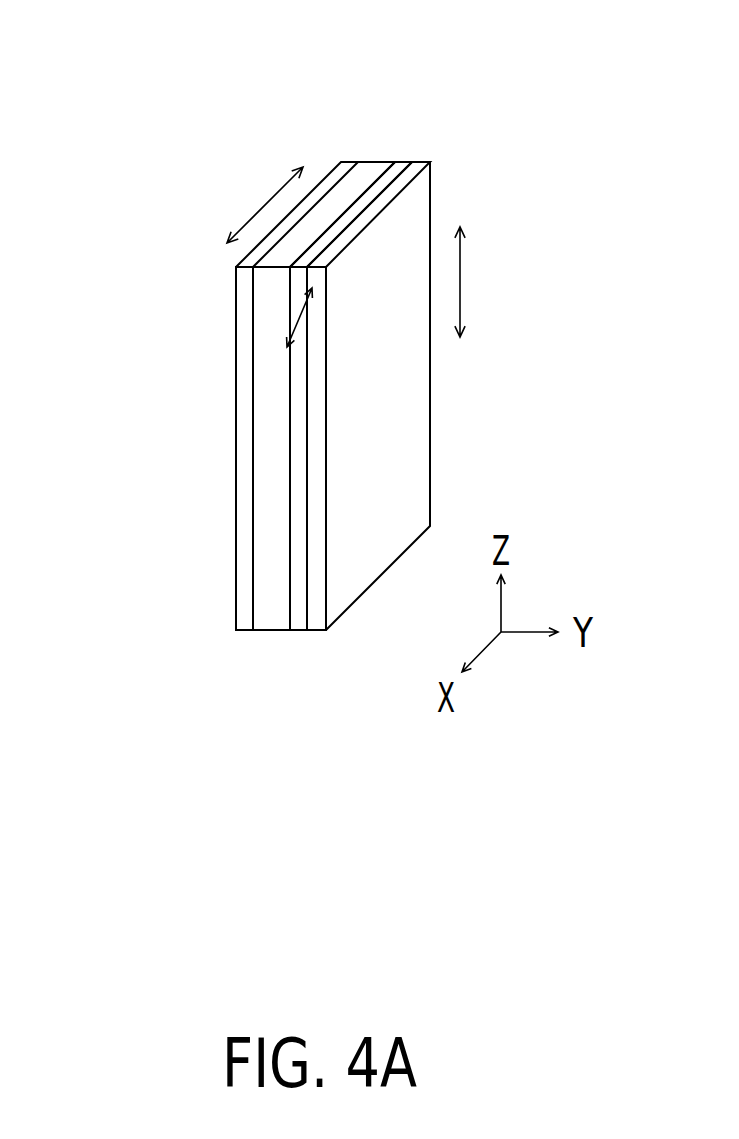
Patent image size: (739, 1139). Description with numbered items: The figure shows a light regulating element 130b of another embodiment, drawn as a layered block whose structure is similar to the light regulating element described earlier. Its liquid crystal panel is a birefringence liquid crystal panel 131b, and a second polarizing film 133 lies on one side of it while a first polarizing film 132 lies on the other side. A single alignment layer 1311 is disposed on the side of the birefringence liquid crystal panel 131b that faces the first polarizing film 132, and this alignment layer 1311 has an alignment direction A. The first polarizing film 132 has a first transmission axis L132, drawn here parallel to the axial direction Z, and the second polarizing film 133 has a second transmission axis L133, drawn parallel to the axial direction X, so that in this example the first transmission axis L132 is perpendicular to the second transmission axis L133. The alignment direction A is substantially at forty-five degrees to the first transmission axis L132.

The light regulating element 130b is at (133, 55).
The birefringence liquid crystal panel 131b is at (400, 145).
The alignment layer 1311 is at (298, 620).
The first polarizing film 132 is at (316, 620).
The second polarizing film 133 is at (243, 620).
The second transmission axis L133 is at (260, 207).
The first transmission axis L132 is at (461, 278).
The alignment direction A is at (300, 317).